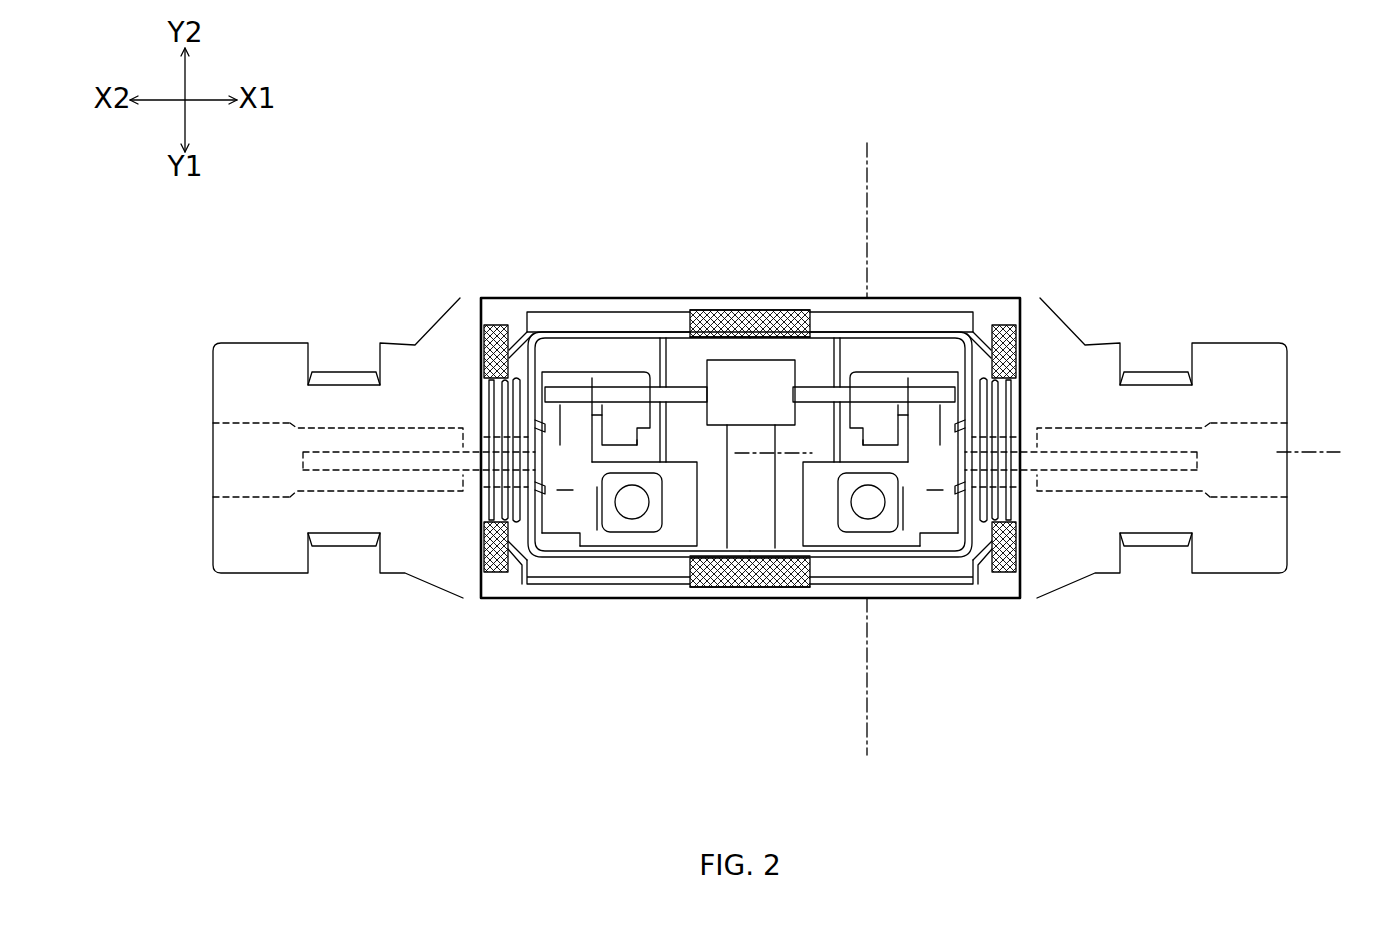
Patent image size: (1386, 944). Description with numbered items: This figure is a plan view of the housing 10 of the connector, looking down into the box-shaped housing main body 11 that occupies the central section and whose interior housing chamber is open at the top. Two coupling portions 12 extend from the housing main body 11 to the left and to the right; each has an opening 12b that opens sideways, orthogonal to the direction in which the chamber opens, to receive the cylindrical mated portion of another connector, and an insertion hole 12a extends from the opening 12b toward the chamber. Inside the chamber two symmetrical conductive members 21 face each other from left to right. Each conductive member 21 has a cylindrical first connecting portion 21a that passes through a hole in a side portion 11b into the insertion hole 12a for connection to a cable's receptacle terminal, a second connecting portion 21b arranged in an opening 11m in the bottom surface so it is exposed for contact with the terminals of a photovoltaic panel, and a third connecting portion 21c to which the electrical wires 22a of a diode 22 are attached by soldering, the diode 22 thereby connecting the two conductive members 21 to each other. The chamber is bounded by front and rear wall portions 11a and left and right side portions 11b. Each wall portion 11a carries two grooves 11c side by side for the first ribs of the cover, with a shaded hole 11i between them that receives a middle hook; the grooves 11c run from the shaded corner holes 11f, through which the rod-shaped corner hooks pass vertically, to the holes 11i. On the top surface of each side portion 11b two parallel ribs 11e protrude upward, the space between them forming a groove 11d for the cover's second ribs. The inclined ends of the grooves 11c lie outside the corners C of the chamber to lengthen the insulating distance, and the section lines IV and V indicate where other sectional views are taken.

The housing 10 is at (1070, 208).
The housing main body 11 is at (522, 614).
The wall portion 11a is at (686, 307).
The side portion 11b is at (552, 490).
The groove 11c is at (547, 317).
The groove 11d is at (505, 397).
The rib 11e is at (515, 502).
The hole 11f is at (490, 330).
The hole 11i is at (740, 308).
The opening 11m is at (672, 533).
The coupling portion 12 is at (265, 592).
The insertion hole 12a is at (345, 423).
The opening 12b is at (210, 503).
The conductive member 21 is at (553, 360).
The first connecting portion 21a is at (310, 470).
The second connecting portion 21b is at (632, 508).
The third connecting portion 21c is at (583, 380).
The diode 22 is at (756, 372).
The electrical wire 22a is at (627, 397).
The corner C is at (523, 343).
The section line IV is at (880, 161).
The section line V is at (757, 466).